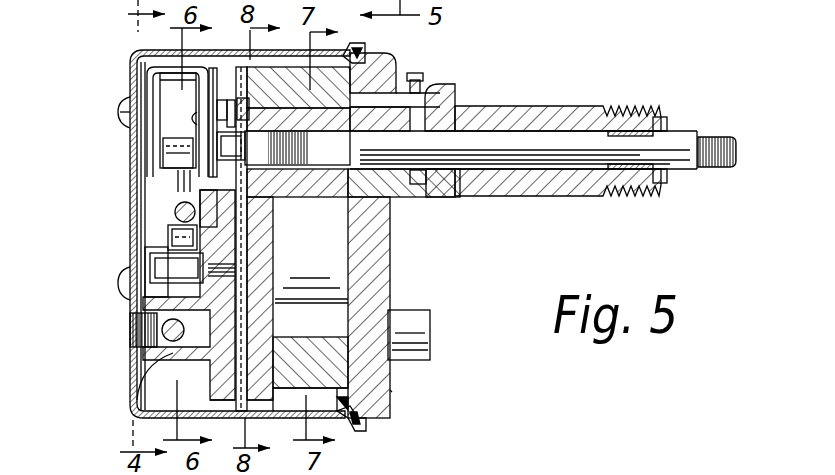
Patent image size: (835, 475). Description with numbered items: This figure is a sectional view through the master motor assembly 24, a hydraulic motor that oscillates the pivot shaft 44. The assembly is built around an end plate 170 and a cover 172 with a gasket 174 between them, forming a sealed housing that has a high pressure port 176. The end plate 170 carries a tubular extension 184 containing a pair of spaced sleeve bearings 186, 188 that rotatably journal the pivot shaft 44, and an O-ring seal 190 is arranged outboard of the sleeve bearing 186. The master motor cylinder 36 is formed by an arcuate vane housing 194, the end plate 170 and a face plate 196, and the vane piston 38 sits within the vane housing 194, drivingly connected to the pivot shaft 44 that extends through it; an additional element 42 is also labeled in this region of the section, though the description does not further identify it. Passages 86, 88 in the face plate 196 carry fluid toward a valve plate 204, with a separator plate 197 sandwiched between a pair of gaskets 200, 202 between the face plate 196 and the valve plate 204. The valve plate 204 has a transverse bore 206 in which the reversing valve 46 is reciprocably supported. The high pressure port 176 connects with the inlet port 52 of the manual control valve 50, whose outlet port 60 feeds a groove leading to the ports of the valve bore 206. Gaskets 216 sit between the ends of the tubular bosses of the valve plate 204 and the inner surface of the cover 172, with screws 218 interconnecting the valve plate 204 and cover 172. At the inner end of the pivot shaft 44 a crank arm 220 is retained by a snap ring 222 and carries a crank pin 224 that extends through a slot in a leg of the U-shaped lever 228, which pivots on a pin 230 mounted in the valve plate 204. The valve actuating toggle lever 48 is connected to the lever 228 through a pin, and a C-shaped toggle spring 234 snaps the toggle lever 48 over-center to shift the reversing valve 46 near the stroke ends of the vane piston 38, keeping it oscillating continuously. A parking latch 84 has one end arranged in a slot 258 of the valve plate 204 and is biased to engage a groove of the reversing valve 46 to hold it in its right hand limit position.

The cover 172 is at (133, 57).
The gaskets 216 is at (137, 77).
The screws 218 is at (125, 108).
The toggle spring 234 is at (162, 118).
The U-shaped lever 228 is at (152, 148).
The valve actuating toggle lever 48 is at (172, 175).
The reversing valve 46 is at (180, 205).
The transverse bore 206 is at (165, 212).
The slot 258 is at (168, 228).
The parking latch 84 is at (160, 242).
The pin 230 is at (152, 280).
The high pressure port 176 is at (138, 316).
The inlet port 52 is at (163, 332).
The manual control valve 50 is at (140, 368).
The outlet port 60 is at (212, 330).
The valve plate 204 is at (135, 408).
The gasket 202 is at (218, 407).
The gasket 200 is at (247, 395).
The face plate 196 is at (272, 392).
The gasket 174 is at (357, 425).
The arcuate vane housing 194 is at (330, 380).
The end plate 170 is at (378, 393).
The master motor cylinder 36 is at (335, 368).
The column 42 is at (340, 320).
The master motor assembly 24 is at (403, 233).
The vane piston 38 is at (338, 188).
The passage 86 is at (250, 203).
The passage 88 is at (247, 230).
The separator plate 197 is at (238, 254).
The crank arm 220 is at (243, 117).
The snap ring 222 is at (217, 123).
The crank pin 224 is at (272, 95).
The sleeve bearing 186 is at (440, 90).
The O-ring seal 190 is at (477, 104).
The pivot shaft 44 is at (668, 140).
The tubular extension 184 is at (565, 185).
The sleeve bearing 188 is at (640, 178).